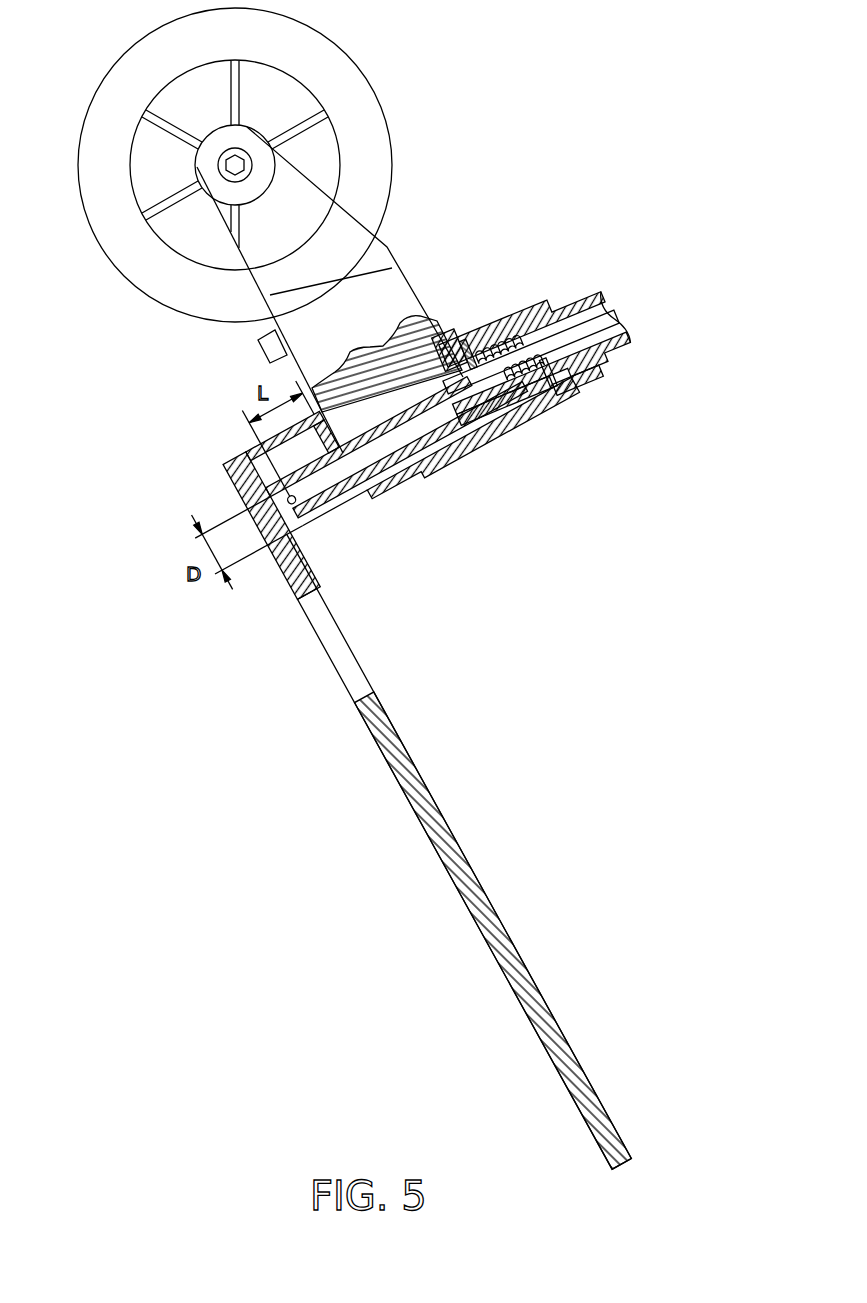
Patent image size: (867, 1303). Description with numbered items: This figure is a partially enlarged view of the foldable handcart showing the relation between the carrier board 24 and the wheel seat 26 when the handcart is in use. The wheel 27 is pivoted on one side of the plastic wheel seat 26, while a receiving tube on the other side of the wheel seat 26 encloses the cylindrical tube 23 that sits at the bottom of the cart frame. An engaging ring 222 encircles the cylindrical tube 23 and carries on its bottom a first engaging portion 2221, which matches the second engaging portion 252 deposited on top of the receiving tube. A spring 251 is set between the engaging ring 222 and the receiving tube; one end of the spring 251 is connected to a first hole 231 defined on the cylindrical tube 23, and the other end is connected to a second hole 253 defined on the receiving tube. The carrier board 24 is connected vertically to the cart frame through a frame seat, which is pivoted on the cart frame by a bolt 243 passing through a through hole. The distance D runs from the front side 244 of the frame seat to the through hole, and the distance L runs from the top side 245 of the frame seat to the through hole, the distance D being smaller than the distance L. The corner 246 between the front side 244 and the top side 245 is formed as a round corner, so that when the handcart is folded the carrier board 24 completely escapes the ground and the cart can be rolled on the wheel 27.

The wheel 27 is at (363, 103).
The wheel seat 26 is at (152, 366).
The carrier board 24 is at (433, 824).
The front side 244 is at (313, 552).
The bolt 243 is at (290, 497).
The top side 245 is at (383, 496).
The corner 246 is at (367, 490).
The cylindrical tube 23 is at (604, 325).
The first hole 231 is at (550, 362).
The spring 251 is at (495, 335).
The second hole 253 is at (460, 340).
The second engaging portion 252 is at (450, 350).
The first engaging portion 2221 is at (535, 395).
The engaging ring 222 is at (578, 400).